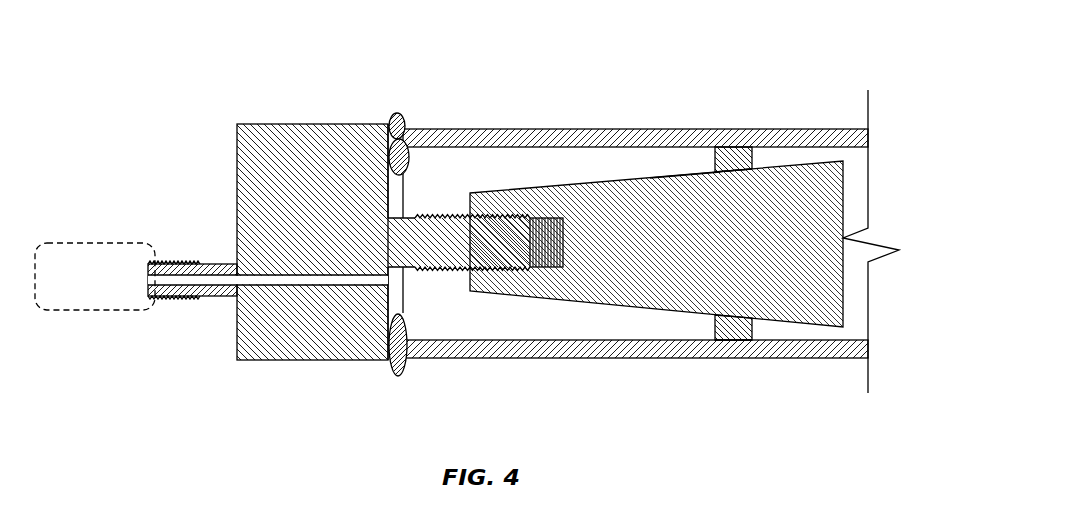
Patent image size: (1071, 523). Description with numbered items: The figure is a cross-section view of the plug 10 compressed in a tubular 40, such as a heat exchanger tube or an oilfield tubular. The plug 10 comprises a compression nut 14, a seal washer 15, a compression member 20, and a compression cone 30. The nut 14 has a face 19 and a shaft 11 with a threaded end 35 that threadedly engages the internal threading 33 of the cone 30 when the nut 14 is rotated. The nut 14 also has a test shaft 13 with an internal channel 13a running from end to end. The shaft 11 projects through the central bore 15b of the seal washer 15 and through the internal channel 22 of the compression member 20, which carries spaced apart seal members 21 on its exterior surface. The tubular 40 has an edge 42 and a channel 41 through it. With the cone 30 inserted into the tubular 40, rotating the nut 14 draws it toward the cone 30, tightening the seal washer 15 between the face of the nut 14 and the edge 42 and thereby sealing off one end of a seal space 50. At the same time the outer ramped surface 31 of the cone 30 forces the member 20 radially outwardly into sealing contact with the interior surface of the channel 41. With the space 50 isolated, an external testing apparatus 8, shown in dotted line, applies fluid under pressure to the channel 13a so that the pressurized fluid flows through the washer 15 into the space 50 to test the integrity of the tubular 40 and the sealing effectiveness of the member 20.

The external testing apparatus 8 is at (103, 243).
The plug 10 is at (190, 88).
The shaft 11 is at (478, 281).
The test shaft 13 is at (167, 298).
The internal channel 13a is at (148, 280).
The compression nut 14 is at (277, 123).
The seal washer 15 is at (396, 378).
The central bore 15b is at (398, 190).
The face 19 is at (390, 138).
The compression member 20 is at (708, 330).
The seal members 21 is at (740, 342).
The internal channel 22 is at (735, 172).
The compression cone 30 is at (678, 255).
The outer ramped surface 31 is at (681, 175).
The internal threading 33 is at (538, 221).
The threaded end 35 is at (560, 225).
The tubular 40 is at (703, 143).
The channel 41 is at (497, 152).
The edge 42 is at (404, 113).
The seal space 50 is at (455, 318).